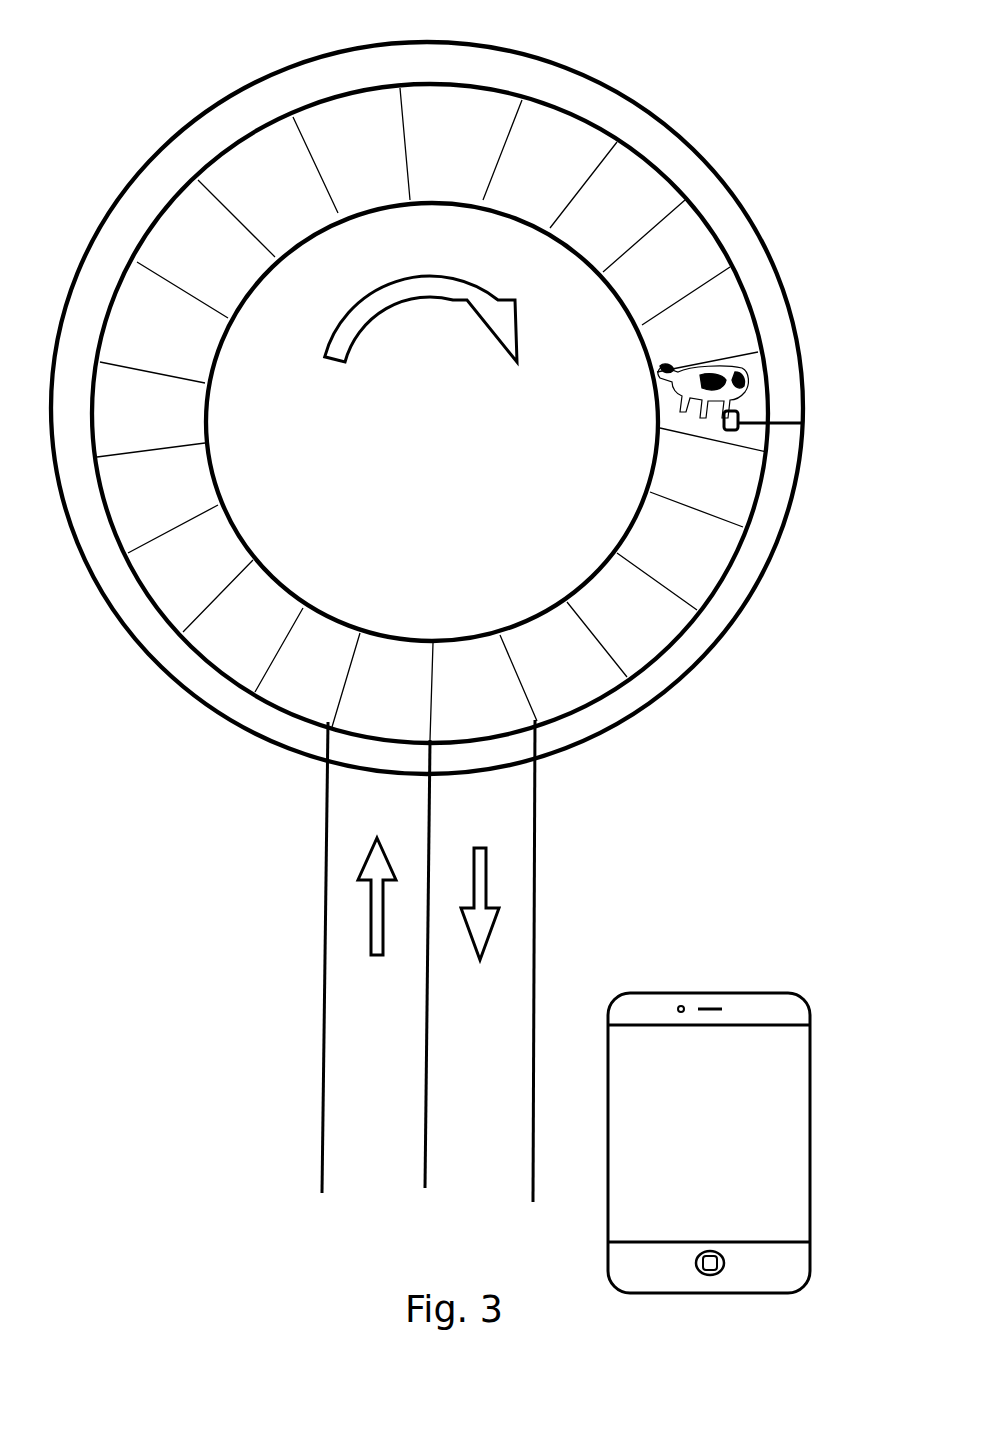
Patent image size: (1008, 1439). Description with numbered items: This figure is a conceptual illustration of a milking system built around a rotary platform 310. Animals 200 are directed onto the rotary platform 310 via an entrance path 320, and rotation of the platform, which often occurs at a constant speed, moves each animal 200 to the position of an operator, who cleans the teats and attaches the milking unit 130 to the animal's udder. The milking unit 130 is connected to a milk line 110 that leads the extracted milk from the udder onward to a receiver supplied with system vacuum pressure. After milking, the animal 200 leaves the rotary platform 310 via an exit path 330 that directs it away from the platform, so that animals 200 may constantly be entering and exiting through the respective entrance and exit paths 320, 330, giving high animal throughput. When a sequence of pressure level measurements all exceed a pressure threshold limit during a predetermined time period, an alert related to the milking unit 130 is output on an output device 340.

The milk line 110 is at (507, 52).
The rotary platform 310 is at (336, 95).
The animal 200 is at (732, 378).
The milking unit 130 is at (739, 418).
The entrance path 320 is at (345, 905).
The exit path 330 is at (523, 906).
The output device 340 is at (778, 1000).